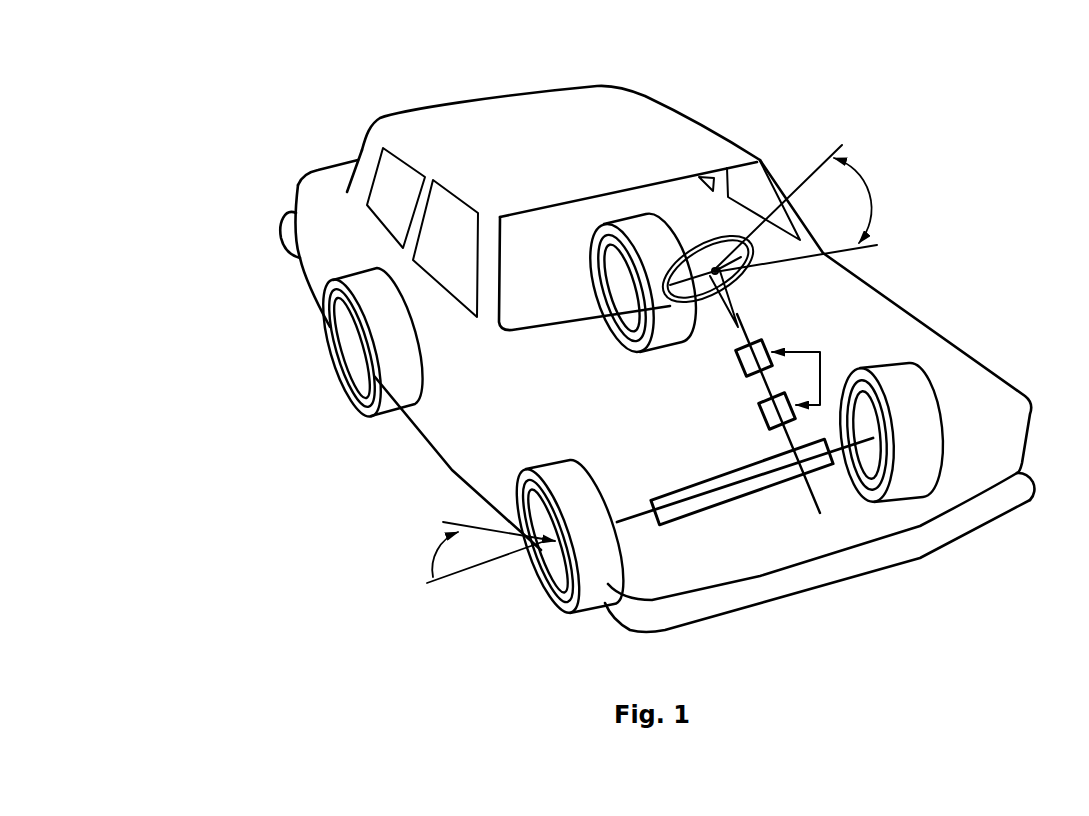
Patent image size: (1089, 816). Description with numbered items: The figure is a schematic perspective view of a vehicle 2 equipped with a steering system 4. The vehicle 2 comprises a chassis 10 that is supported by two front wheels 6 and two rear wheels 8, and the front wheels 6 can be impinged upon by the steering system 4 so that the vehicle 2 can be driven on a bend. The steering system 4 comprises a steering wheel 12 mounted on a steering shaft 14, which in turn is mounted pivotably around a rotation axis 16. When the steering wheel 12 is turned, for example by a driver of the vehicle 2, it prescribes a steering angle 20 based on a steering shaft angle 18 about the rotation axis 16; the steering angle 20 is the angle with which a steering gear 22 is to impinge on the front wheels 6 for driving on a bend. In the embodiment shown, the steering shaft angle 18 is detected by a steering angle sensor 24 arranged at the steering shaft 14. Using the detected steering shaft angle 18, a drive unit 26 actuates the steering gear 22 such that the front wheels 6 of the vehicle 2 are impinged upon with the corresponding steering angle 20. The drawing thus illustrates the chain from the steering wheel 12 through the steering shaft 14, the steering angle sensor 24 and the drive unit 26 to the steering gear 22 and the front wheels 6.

The vehicle 2 is at (221, 145).
The steering system 4 is at (606, 418).
The front wheels 6 is at (560, 614).
The rear wheels 8 is at (356, 417).
The chassis 10 is at (597, 86).
The steering wheel 12 is at (710, 237).
The steering shaft 14 is at (742, 327).
The rotation axis 16 is at (814, 495).
The steering shaft angle 18 is at (866, 203).
The steering angle 20 is at (433, 556).
The steering gear 22 is at (716, 472).
The steering angle sensor 24 is at (736, 362).
The drive unit 26 is at (760, 409).